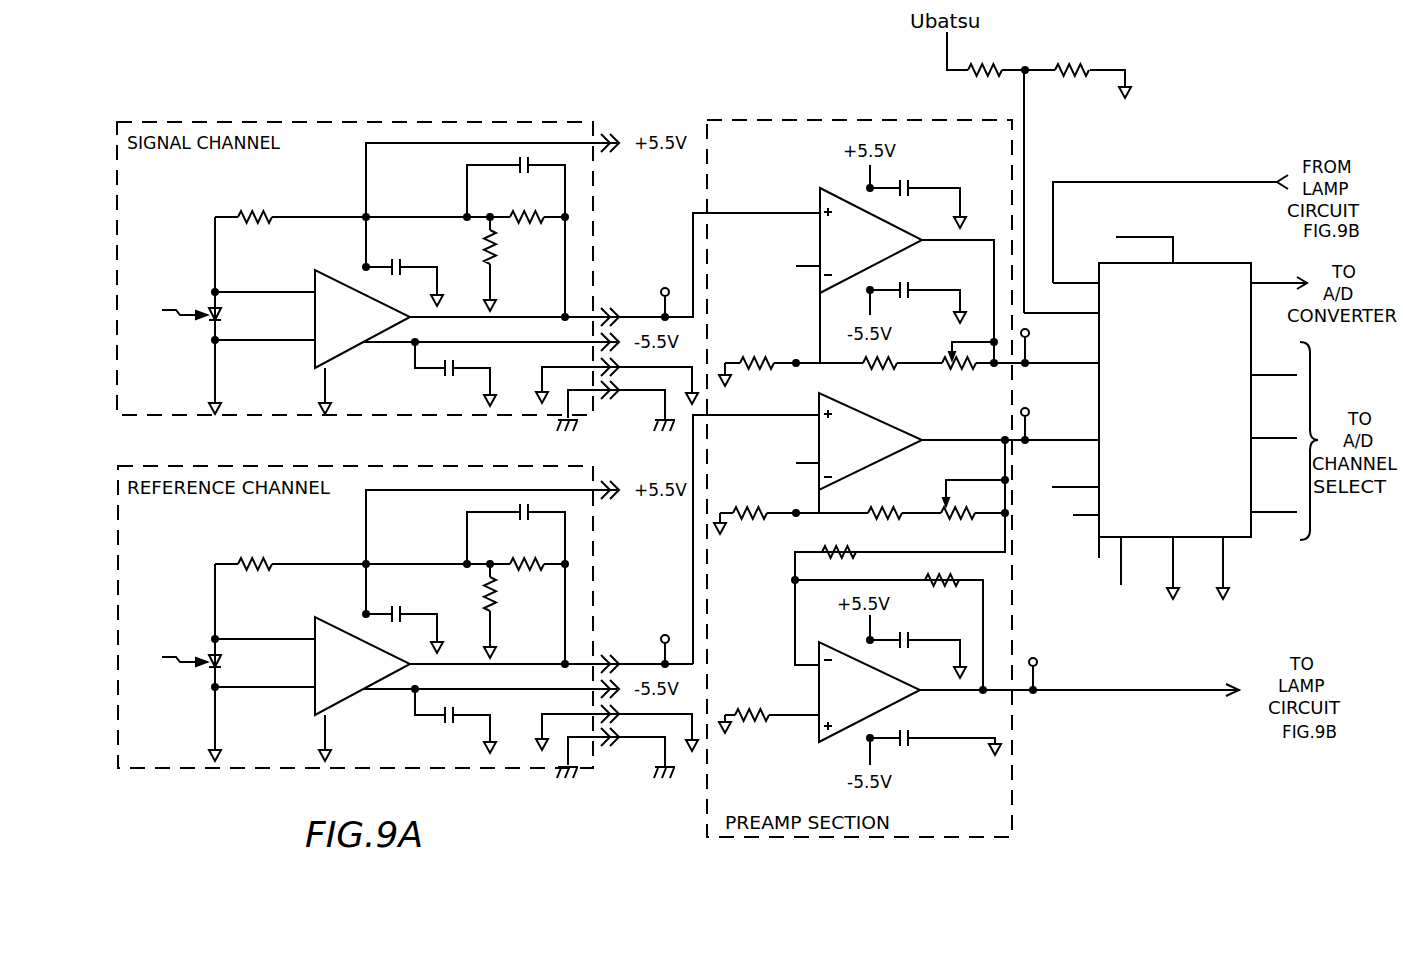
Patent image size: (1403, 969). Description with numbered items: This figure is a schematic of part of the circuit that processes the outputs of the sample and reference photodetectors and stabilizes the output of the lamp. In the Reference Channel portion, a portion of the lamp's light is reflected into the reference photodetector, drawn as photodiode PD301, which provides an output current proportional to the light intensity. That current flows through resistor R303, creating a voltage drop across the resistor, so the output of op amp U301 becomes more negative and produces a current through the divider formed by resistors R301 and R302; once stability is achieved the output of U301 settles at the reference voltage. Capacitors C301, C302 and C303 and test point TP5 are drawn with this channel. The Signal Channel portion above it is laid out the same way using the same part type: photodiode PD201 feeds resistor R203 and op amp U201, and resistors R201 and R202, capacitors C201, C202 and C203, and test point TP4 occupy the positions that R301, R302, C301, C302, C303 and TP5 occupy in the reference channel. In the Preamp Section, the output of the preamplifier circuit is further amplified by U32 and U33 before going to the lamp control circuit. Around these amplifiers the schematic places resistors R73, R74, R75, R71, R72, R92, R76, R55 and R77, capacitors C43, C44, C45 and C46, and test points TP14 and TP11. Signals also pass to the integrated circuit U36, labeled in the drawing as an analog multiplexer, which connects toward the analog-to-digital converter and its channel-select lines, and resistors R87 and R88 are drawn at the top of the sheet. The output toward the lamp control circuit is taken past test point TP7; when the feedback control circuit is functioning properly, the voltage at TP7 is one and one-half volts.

The 1M feedback resistor, signal channel R203 is at (290, 216).
The signal channel photodiode PD201 is at (221, 316).
The AD549KH integrated circuit U201 is at (356, 327).
The .1 uF supply bypass capacitor C201 is at (403, 261).
The .1 uF feedback capacitor C202 is at (514, 229).
The 100K feedback resistor R201 is at (467, 217).
The 10K resistor to ground R202 is at (513, 264).
The .1 uF supply bypass capacitor C203 is at (454, 373).
The test point 4 TP4 is at (663, 293).
The resistor R303 is at (290, 563).
The reference photodetector PD301 is at (221, 663).
The op amp U301 is at (356, 674).
The .1 uF supply bypass capacitor C301 is at (405, 608).
The .1 uF feedback capacitor C302 is at (514, 576).
The resistor R301 is at (467, 564).
The resistor R302 is at (513, 611).
The .1 uF supply bypass capacitor C303 is at (452, 720).
The test point 5 TP5 is at (663, 640).
The amplifier U32 is at (866, 339).
The .1 uF bypass capacitor C43 is at (916, 197).
The .1 uF bypass capacitor C44 is at (916, 294).
The resistor to ground R73 is at (760, 375).
The feedback resistor R74 is at (868, 375).
The potentiometer R75 is at (1019, 375).
The test point 14 TP14 is at (1046, 342).
The test point 11 TP11 is at (1046, 418).
The 10K resistor to ground R71 is at (758, 510).
The 150K feedback resistor R72 is at (868, 511).
The 100K potentiometer R92 is at (972, 515).
The 100K resistor R76 is at (900, 553).
The 61.9K feedback resistor R55 is at (889, 585).
The amplifier U33 is at (866, 692).
The .1 uF bypass capacitor C45 is at (916, 647).
The .1 uF bypass capacitor C46 is at (934, 740).
The 39K resistor to ground R77 is at (772, 717).
The test point TP7 is at (1050, 668).
The CD4051BCN integrated circuit U36 is at (1165, 343).
The 390K resistor R87 is at (985, 73).
The 100K resistor R88 is at (1074, 71).